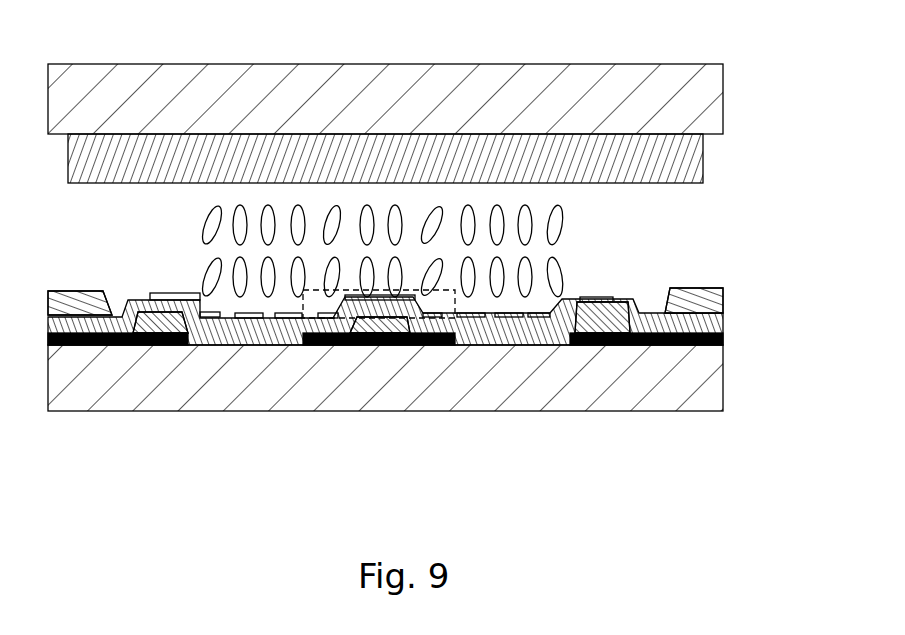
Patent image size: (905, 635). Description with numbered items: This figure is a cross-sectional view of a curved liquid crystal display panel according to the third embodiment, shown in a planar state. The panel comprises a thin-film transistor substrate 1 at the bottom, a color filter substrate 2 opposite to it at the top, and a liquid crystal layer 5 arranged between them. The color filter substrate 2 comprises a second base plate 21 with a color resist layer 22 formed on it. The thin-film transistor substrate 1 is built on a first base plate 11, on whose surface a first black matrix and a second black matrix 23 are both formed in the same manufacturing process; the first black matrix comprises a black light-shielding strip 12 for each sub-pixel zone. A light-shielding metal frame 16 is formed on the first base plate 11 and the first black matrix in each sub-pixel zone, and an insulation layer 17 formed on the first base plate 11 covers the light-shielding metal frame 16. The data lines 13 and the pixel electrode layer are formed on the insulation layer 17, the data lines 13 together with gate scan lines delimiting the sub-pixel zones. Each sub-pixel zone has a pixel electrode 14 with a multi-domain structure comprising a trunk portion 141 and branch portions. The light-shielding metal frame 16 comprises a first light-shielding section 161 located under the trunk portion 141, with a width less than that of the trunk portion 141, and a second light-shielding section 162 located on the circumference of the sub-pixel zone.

The thin-film transistor substrate 1 is at (426, 395).
The color filter substrate 2 is at (421, 96).
The liquid crystal layer 5 is at (557, 273).
The first base plate 11 is at (605, 363).
The black light-shielding strip 12 is at (440, 345).
The data line 13 is at (63, 345).
The pixel electrode 14 is at (545, 345).
The trunk portion 141 is at (383, 345).
The light-shielding metal frame 16 is at (274, 406).
The first light-shielding section 161 is at (359, 382).
The second light-shielding section 162 is at (162, 345).
The insulation layer 17 is at (662, 347).
The second base plate 21 is at (248, 112).
The color resist layer 22 is at (348, 160).
The second black matrix 23 is at (721, 347).